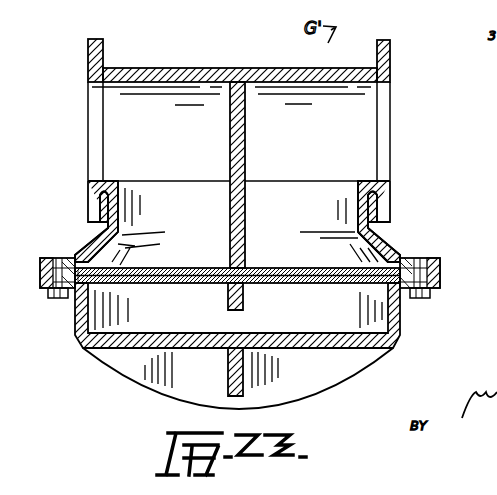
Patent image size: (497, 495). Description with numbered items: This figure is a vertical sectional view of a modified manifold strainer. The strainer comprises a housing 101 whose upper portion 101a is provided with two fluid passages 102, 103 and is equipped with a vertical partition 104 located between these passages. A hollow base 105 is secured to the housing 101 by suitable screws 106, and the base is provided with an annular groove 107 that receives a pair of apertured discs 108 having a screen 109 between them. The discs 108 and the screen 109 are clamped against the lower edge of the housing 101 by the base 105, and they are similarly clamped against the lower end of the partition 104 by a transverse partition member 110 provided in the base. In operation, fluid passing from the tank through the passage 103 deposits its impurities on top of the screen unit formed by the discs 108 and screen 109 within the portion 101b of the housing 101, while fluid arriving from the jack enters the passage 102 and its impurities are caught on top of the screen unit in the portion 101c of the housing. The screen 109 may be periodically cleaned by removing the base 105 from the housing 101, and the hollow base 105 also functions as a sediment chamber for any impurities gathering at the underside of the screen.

The housing 101 is at (383, 241).
The upper portion of housing 101a is at (227, 68).
The housing portion 101b is at (104, 250).
The housing portion 101c is at (349, 221).
The fluid passage 102 is at (372, 128).
The fluid passage 103 is at (97, 117).
The vertical partition 104 is at (246, 196).
The hollow base 105 is at (338, 350).
The screws 106 is at (421, 301).
The annular groove 107 is at (75, 297).
The apertured discs 108 is at (206, 288).
The screen 109 is at (193, 284).
The transverse partition member 110 is at (246, 300).